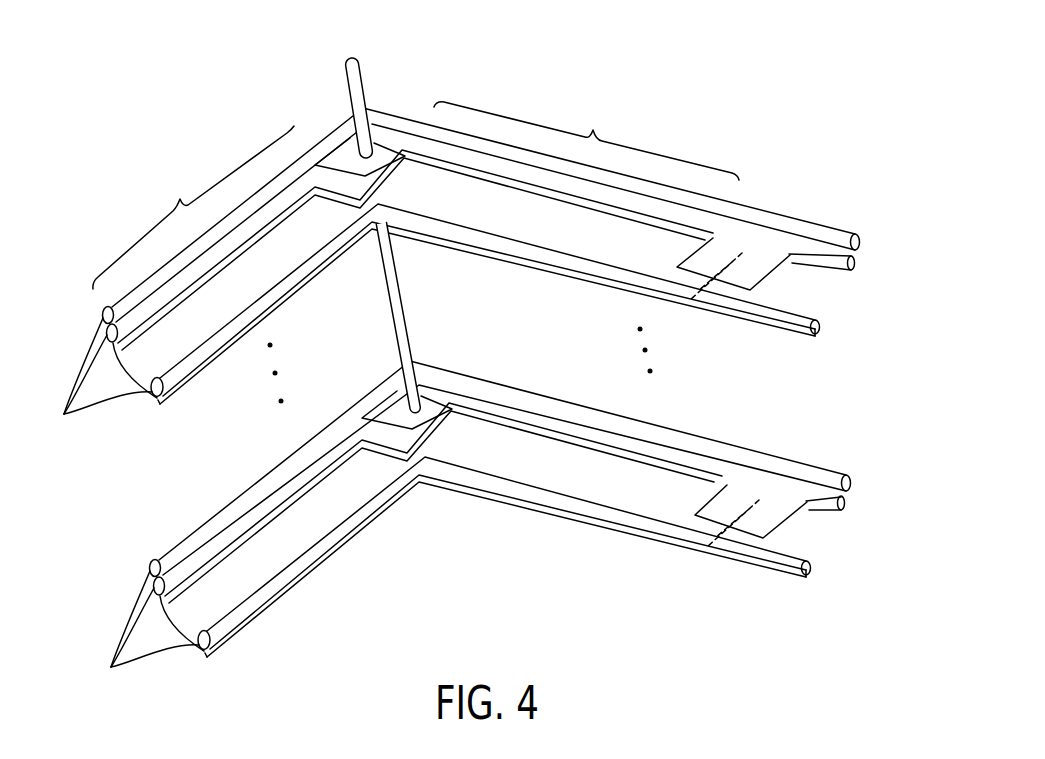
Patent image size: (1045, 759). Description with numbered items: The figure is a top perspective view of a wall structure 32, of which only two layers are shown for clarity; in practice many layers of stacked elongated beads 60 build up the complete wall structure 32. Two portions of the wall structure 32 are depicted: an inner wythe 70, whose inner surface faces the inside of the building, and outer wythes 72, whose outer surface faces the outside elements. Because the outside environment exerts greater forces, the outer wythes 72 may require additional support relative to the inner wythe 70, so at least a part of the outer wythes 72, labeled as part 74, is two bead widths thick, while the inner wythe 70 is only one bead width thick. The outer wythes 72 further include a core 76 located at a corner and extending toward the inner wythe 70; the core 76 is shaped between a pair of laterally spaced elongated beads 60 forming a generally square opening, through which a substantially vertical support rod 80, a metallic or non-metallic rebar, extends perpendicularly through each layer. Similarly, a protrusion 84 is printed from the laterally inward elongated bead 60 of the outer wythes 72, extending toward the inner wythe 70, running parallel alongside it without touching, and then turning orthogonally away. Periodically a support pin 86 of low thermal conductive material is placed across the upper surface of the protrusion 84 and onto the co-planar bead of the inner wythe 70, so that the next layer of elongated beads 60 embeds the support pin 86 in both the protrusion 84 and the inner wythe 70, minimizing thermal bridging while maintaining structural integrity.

The wall structure 32 is at (495, 342).
The elongated beads 60 is at (121, 501).
The inner wythe 70 is at (836, 343).
The outer wythes 72 is at (868, 271).
The part 74 is at (416, 191).
The core 76 is at (378, 146).
The support rod 80 is at (356, 95).
The protrusion 84 is at (757, 268).
The support pin 86 is at (730, 263).